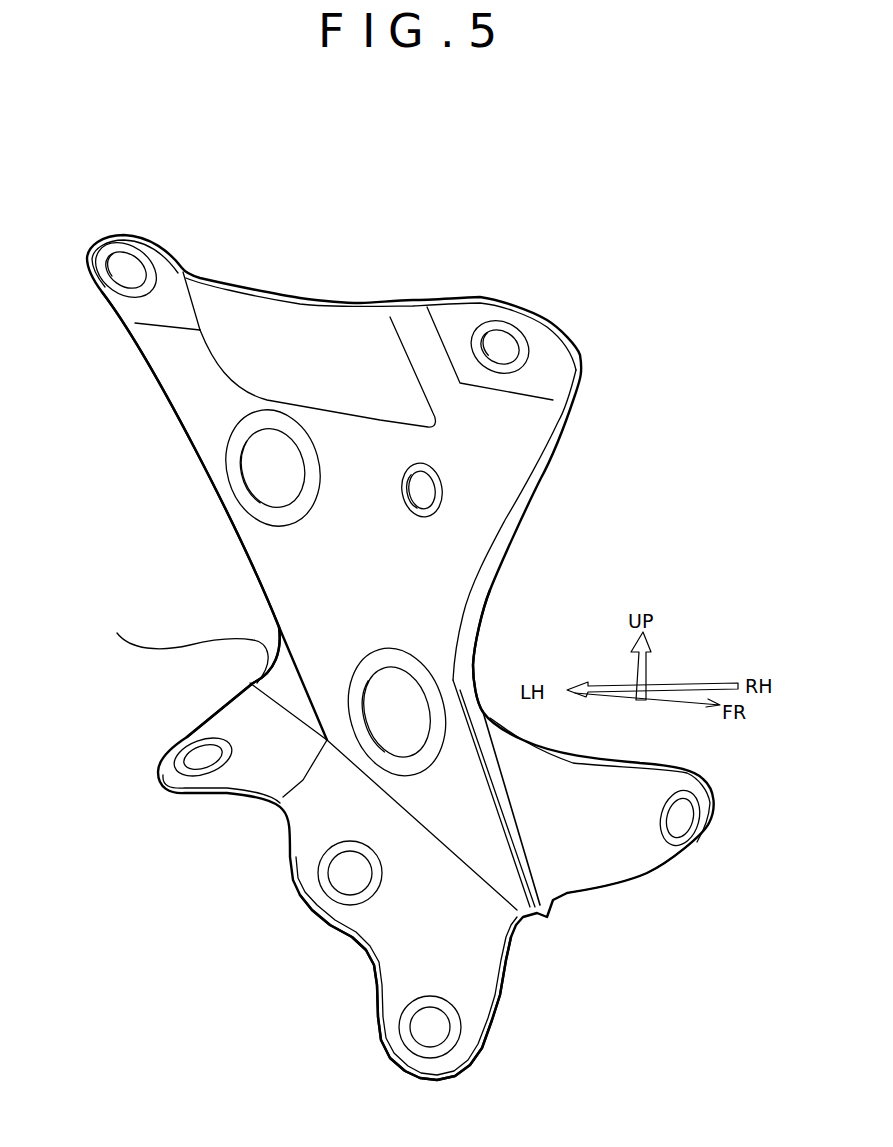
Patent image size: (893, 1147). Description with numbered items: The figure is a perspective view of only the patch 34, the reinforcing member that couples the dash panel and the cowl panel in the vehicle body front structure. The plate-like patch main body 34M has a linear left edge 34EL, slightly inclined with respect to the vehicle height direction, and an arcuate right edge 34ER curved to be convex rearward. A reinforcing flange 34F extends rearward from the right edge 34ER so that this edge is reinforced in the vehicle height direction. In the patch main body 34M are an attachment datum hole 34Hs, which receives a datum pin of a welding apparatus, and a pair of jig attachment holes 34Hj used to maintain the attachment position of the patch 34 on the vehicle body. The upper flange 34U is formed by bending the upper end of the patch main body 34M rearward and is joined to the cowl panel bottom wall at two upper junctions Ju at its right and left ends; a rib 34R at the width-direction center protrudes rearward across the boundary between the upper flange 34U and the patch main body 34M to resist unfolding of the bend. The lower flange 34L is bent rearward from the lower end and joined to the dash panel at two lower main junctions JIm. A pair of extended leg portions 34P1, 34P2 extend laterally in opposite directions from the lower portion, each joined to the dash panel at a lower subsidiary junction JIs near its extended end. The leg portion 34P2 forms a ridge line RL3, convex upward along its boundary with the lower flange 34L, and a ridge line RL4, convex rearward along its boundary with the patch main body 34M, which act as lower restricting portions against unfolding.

The patch 34 is at (549, 266).
The upper flange 34U is at (155, 262).
The rib 34R is at (280, 323).
The reinforcing flange 34F is at (537, 483).
The patch main body 34M is at (460, 523).
The left edge 34EL is at (247, 553).
The right edge 34ER is at (480, 618).
The lower flange 34L is at (467, 960).
The extended leg portion 34P1 is at (577, 860).
The extended leg portion 34P2 is at (228, 713).
The jig attachment holes 34Hj is at (272, 503).
The attachment datum hole 34Hs is at (423, 485).
The ridge line RL3 is at (305, 774).
The ridge line RL4 is at (317, 693).
The upper junctions Ju is at (125, 268).
The lower subsidiary junctions JIs is at (207, 757).
The lower main junctions JIm is at (427, 1027).